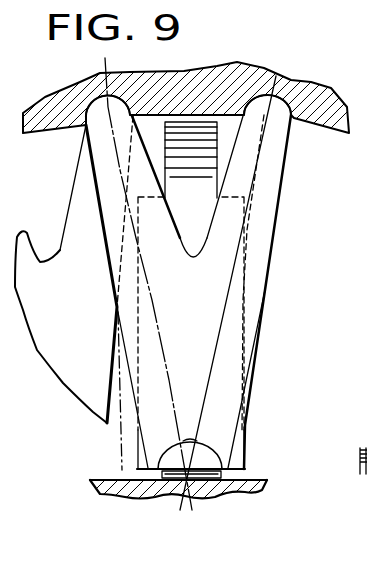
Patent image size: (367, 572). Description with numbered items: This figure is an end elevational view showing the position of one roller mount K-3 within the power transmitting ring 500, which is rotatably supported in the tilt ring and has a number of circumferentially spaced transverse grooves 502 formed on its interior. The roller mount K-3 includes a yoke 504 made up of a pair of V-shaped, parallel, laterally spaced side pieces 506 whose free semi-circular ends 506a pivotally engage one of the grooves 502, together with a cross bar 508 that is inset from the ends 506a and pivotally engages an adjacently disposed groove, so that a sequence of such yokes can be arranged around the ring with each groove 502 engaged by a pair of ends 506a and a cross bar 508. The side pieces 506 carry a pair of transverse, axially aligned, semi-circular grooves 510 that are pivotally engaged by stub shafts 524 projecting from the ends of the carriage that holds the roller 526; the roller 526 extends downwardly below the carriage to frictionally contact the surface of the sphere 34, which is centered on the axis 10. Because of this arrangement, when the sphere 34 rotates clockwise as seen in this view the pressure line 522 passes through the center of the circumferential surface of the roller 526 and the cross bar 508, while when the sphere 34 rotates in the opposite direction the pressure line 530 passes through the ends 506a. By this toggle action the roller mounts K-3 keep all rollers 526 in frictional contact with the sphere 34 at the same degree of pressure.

The axis 10 is at (108, 70).
The sphere 34 is at (98, 486).
The power transmitting ring 500 is at (296, 83).
The transverse grooves 502 is at (116, 100).
The yoke 504 is at (266, 260).
The side pieces 506 is at (366, 368).
The semi-circular ends 506a is at (85, 127).
The cross bar 508 is at (282, 112).
The transverse axially aligned grooves 510 is at (176, 452).
The pressure line 522 is at (224, 331).
The stub shafts 524 is at (218, 459).
The roller 526 is at (222, 494).
The pressure line 530 is at (148, 300).
The roller mount K-3 is at (284, 218).